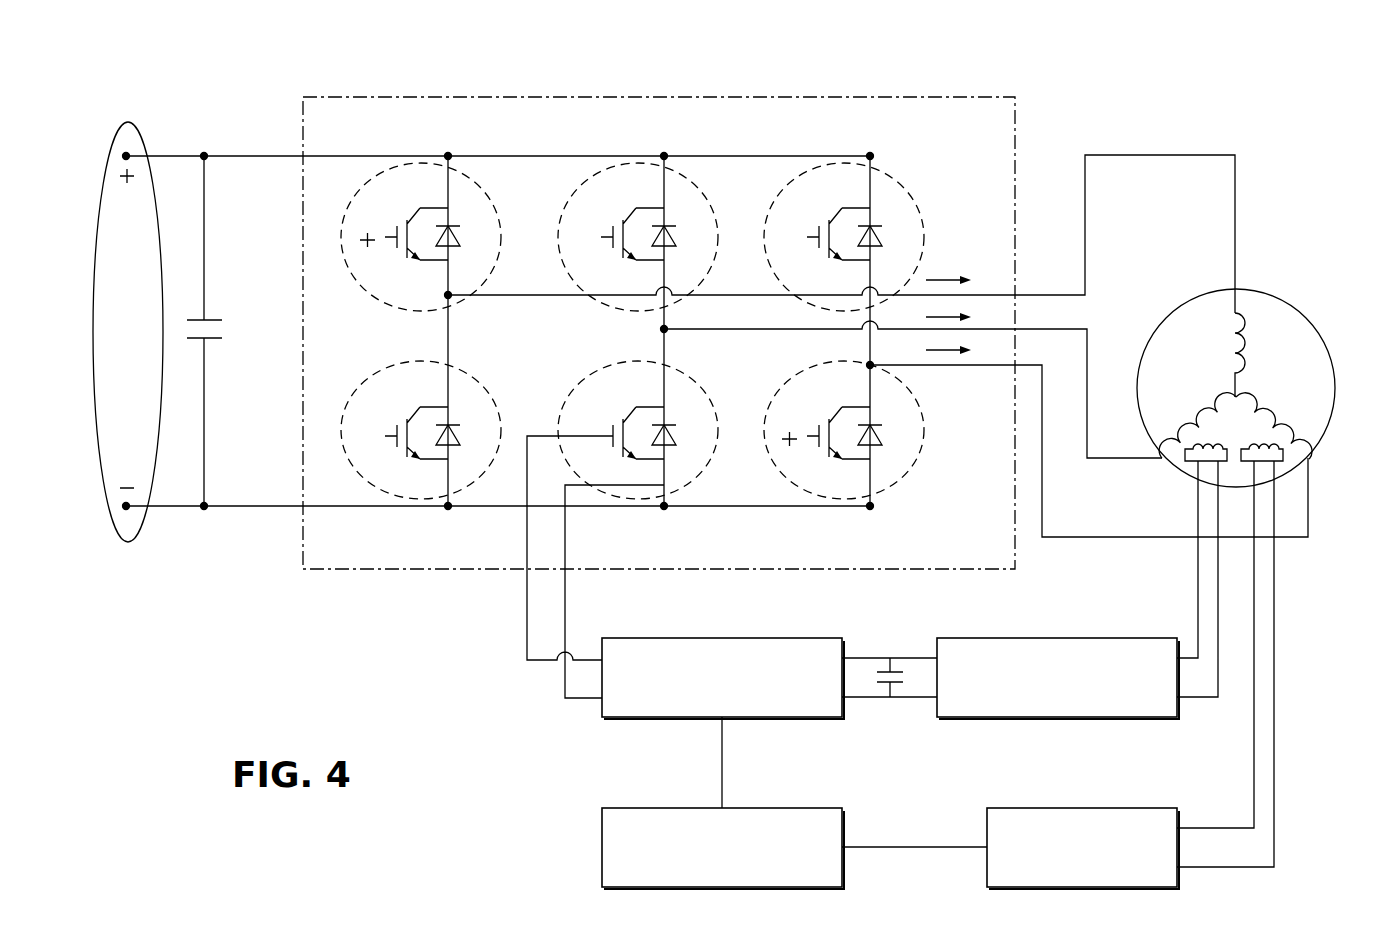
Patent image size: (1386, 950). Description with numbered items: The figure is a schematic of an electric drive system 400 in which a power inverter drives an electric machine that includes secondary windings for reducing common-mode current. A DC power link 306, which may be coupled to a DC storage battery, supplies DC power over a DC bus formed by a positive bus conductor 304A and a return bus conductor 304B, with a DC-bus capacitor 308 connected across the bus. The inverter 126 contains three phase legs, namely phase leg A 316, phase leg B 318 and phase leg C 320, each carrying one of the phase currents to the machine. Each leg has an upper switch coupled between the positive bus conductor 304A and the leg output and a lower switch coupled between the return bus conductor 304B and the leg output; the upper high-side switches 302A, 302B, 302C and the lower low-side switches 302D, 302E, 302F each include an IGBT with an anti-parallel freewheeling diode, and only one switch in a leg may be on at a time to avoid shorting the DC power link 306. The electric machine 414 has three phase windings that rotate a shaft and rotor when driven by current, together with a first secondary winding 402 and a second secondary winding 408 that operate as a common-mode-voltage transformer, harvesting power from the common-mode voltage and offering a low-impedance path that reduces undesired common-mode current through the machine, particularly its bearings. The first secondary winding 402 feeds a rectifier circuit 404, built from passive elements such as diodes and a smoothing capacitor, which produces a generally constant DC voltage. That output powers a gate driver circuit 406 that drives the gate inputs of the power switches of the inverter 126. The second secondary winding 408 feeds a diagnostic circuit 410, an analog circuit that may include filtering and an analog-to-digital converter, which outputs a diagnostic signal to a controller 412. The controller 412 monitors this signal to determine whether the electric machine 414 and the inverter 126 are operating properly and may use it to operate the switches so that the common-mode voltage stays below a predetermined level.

The electric drive system 400 is at (996, 68).
The inverter 126 is at (634, 97).
The high-side switch 302A is at (410, 163).
The high-side switch 302B is at (627, 163).
The high-side switch 302C is at (838, 163).
The low-side switch 302D is at (417, 498).
The low-side switch 302E is at (618, 498).
The low-side switch 302F is at (905, 473).
The positive bus conductor 304A is at (267, 144).
The return bus conductor 304B is at (267, 518).
The DC power link 306 is at (128, 124).
The DC-bus capacitor 308 is at (218, 340).
The phase leg A 316 is at (448, 298).
The phase leg B 318 is at (664, 329).
The phase leg C 320 is at (870, 365).
The first secondary winding 402 is at (1188, 418).
The rectifier circuit 404 is at (1063, 638).
The gate driver circuit 406 is at (722, 638).
The second secondary winding 408 is at (1288, 420).
The diagnostic circuit 410 is at (1088, 808).
The controller 412 is at (690, 808).
The electric machine 414 is at (1302, 326).